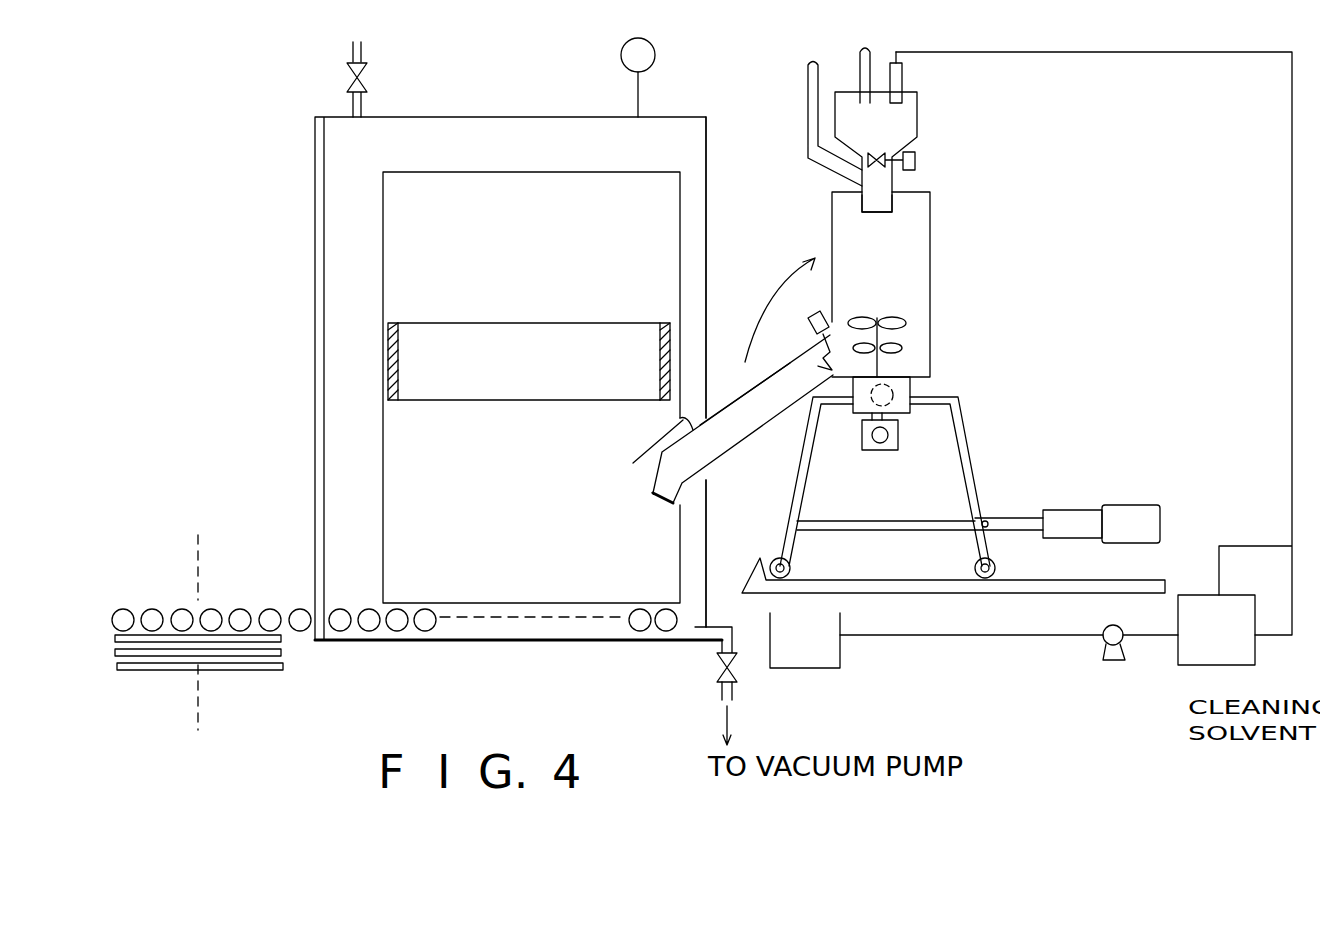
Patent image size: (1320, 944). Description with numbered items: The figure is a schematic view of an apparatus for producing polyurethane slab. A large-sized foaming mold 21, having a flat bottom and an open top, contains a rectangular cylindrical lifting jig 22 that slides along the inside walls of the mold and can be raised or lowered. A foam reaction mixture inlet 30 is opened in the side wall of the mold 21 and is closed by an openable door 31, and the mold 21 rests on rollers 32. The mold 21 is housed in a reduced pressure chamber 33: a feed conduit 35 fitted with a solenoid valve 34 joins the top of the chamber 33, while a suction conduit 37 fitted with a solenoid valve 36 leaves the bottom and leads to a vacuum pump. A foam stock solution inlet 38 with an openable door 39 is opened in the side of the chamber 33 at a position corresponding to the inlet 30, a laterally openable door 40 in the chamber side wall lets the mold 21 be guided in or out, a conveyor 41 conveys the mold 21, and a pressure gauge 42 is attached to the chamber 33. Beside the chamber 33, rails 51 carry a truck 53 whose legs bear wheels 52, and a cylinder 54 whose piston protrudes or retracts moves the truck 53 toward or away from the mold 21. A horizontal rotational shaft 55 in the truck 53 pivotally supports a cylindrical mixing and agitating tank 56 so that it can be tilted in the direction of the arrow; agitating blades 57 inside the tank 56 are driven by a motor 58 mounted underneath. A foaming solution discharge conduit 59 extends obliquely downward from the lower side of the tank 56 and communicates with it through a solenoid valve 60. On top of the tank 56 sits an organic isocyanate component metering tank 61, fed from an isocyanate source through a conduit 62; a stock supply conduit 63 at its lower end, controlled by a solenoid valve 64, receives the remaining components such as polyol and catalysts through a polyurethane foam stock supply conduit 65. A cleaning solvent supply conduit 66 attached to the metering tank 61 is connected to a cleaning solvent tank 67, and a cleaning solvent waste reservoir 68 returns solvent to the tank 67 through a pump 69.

The foaming mold 21 is at (383, 485).
The lifting jig 22 is at (388, 355).
The foam reaction mixture inlet 30 is at (695, 490).
The openable door 31 is at (640, 448).
The rollers 32 is at (397, 622).
The reduced pressure chamber 33 is at (707, 193).
The solenoid valve 34 is at (368, 76).
The feed conduit 35 is at (362, 46).
The solenoid valve 36 is at (718, 666).
The suction conduit 37 is at (734, 695).
The foam stock solution inlet 38 is at (715, 476).
The openable door 39 is at (683, 422).
The laterally openable door 40 is at (315, 163).
The conveyor 41 is at (139, 673).
The pressure gauge 42 is at (656, 53).
The rails 51 is at (892, 592).
The wheels 52 is at (791, 567).
The truck 53 is at (963, 422).
The cylinder 54 is at (1129, 505).
The rotational shaft 55 is at (910, 390).
The mixing and agitating tank 56 is at (918, 299).
The agitating blades 57 is at (865, 318).
The motor 58 is at (898, 445).
The foaming solution discharge conduit 59 is at (744, 413).
The solenoid valve 60 is at (818, 318).
The organic isocyanate component metering tank 61 is at (905, 118).
The conduit 62 is at (860, 60).
The stock supply conduit 63 is at (882, 197).
The solenoid valve 64 is at (918, 160).
The polyurethane foam stock supply conduit 65 is at (808, 101).
The cleaning solvent supply conduit 66 is at (903, 75).
The cleaning solvent tank 67 is at (1190, 658).
The cleaning solvent waste reservoir 68 is at (842, 655).
The pump 69 is at (1100, 654).